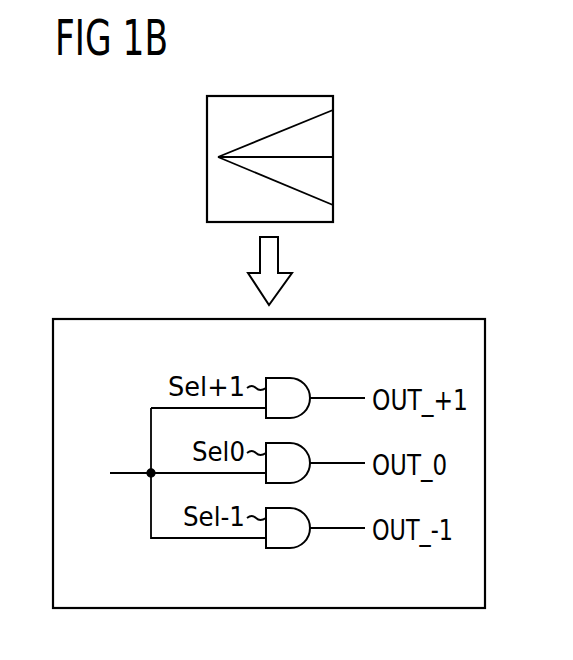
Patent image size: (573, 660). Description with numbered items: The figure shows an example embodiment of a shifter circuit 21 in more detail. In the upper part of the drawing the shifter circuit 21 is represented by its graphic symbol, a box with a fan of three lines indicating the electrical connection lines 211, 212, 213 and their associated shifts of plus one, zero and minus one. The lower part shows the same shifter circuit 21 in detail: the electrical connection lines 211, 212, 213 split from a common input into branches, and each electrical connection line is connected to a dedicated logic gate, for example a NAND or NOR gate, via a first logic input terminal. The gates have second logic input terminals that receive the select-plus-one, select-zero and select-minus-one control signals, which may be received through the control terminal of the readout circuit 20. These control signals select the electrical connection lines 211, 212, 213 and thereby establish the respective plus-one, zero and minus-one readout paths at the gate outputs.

The shifter circuit 21 is at (270, 95).
The electrical connection line 211 is at (334, 110).
The electrical connection line 212 is at (334, 157).
The electrical connection line 213 is at (334, 205).
The readout circuit 20 is at (150, 477).